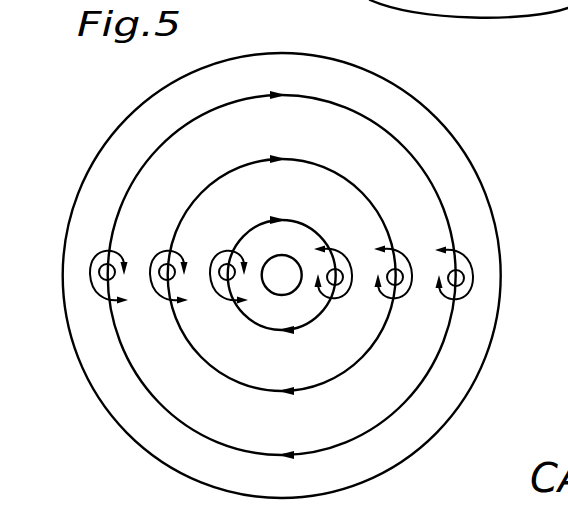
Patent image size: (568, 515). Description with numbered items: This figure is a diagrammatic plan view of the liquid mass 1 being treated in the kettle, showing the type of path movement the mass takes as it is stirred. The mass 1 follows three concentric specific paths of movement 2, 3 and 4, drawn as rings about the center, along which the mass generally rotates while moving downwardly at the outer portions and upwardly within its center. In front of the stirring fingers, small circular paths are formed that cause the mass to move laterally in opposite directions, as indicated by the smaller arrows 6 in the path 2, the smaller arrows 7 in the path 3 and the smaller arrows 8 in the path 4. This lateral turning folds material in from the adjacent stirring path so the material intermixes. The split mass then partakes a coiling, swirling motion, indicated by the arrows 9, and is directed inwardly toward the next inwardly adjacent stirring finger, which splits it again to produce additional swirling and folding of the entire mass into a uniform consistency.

The liquid mass 1 is at (489, 355).
The path of movement 2 is at (425, 174).
The path of movement 3 is at (371, 200).
The path of movement 4 is at (314, 228).
The smaller arrows 6 is at (108, 256).
The smaller arrows 7 is at (168, 256).
The smaller arrows 8 is at (229, 258).
The arrows 9 is at (101, 303).